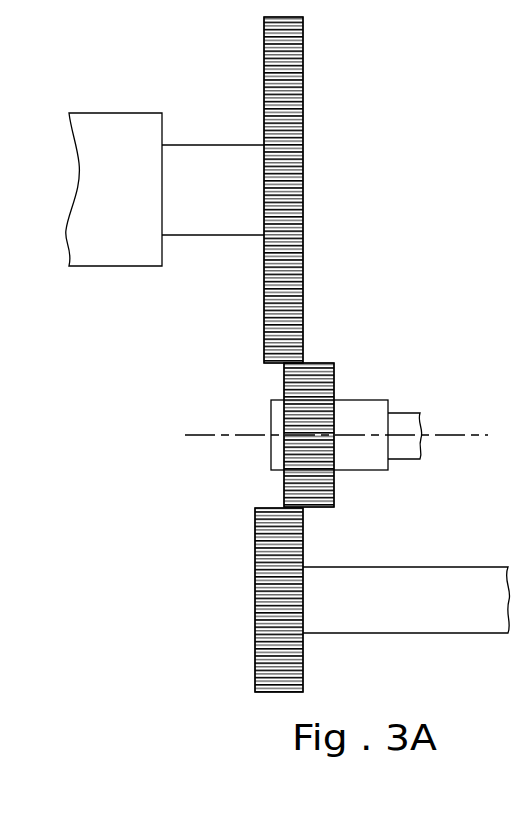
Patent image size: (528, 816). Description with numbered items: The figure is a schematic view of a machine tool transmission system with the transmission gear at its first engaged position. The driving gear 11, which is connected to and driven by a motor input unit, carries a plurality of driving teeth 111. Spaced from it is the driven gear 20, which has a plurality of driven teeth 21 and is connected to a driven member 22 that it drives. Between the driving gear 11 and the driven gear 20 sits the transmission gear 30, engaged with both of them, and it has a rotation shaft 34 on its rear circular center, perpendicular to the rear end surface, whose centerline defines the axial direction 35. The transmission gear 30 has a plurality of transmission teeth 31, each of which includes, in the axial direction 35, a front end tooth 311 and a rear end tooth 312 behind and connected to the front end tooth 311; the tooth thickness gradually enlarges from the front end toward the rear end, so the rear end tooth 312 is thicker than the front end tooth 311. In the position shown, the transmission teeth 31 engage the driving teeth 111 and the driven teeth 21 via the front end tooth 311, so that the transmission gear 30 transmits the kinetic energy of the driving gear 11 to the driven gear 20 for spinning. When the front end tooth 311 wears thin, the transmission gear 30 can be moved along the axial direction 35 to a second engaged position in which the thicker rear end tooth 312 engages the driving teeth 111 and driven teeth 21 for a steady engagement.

The driving gear 11 is at (341, 600).
The driving teeth 111 is at (267, 628).
The driven gear 20 is at (330, 190).
The driven teeth 21 is at (283, 82).
The driven member 22 is at (112, 145).
The transmission gear 30 is at (345, 387).
The transmission teeth 31 is at (364, 387).
The front end tooth 311 is at (292, 377).
The rear end tooth 312 is at (332, 377).
The rotation shaft 34 is at (400, 423).
The axial direction 35 is at (453, 438).